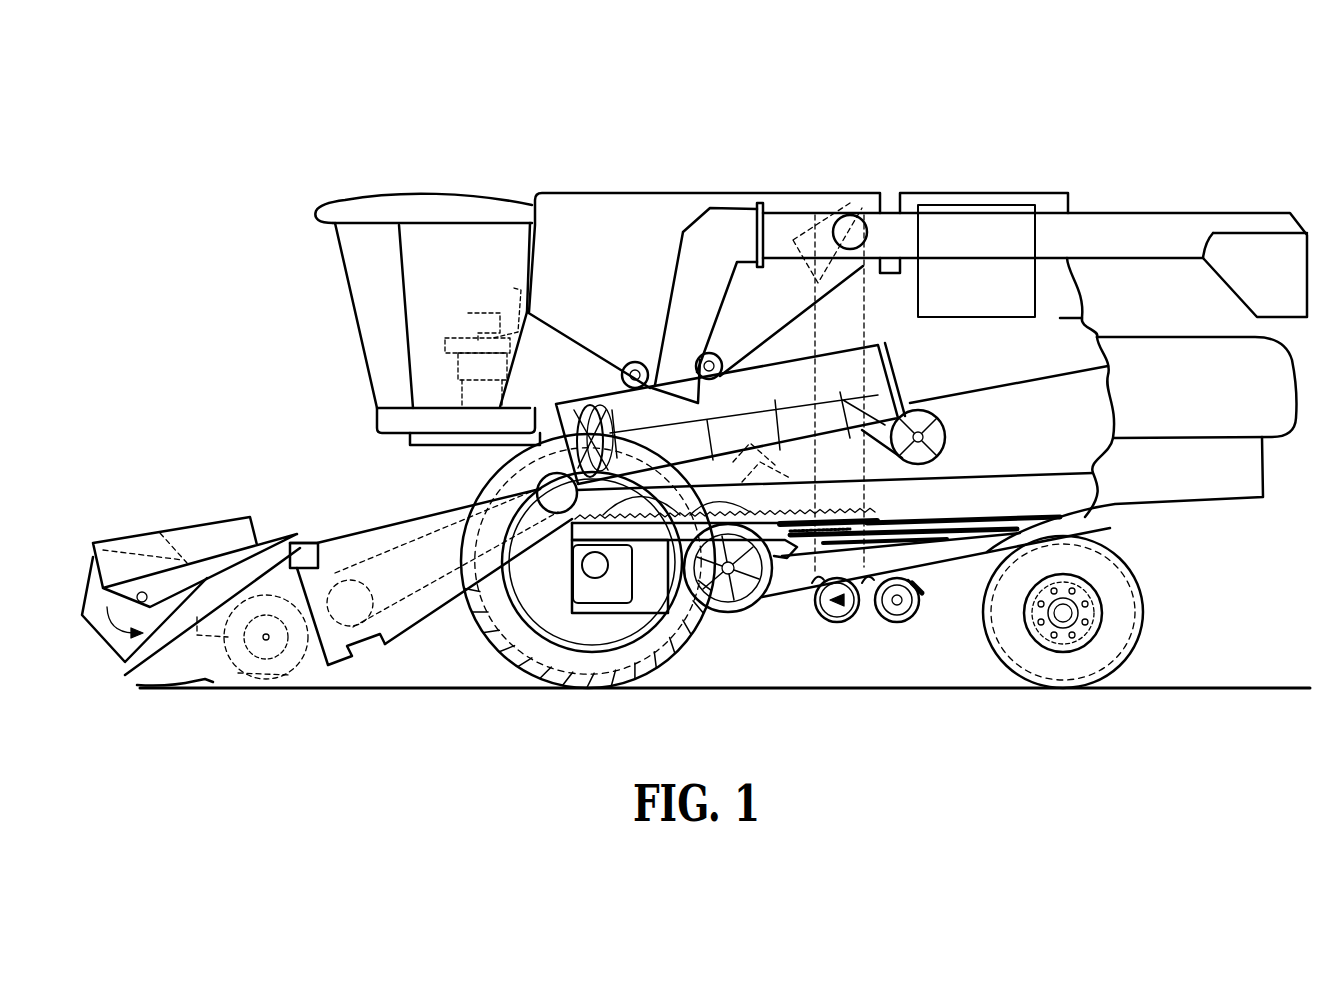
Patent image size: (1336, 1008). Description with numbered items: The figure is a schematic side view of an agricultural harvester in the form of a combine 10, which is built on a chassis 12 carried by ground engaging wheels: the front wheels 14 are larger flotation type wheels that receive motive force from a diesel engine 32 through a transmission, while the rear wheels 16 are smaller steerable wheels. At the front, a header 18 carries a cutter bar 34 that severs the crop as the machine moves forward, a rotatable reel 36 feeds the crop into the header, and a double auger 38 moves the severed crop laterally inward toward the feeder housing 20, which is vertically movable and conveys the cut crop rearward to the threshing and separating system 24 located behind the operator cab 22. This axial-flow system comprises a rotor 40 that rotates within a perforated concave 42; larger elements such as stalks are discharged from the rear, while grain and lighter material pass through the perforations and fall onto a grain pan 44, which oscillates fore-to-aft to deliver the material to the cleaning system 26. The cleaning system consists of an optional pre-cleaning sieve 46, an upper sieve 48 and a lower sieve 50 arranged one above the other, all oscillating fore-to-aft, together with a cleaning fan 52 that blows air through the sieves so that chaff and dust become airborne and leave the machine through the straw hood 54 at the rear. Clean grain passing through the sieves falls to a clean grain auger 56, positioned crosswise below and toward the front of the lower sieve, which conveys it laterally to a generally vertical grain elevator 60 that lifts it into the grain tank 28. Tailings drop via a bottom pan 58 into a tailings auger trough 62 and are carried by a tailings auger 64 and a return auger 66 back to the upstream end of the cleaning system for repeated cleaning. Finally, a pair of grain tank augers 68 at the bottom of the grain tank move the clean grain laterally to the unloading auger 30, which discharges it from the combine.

The combine 10 is at (392, 162).
The chassis 12 is at (1097, 520).
The front wheels 14 is at (497, 648).
The rear wheels 16 is at (1142, 612).
The header 18 is at (178, 503).
The feeder housing 20 is at (382, 523).
The operator cab 22 is at (355, 293).
The threshing and separating system 24 is at (490, 458).
The cleaning system 26 is at (790, 624).
The grain tank 28 is at (567, 198).
The unloading auger 30 is at (1155, 225).
The diesel engine 32 is at (960, 205).
The cutter bar 34 is at (215, 683).
The reel 36 is at (87, 583).
The double auger 38 is at (270, 655).
The rotor 40 is at (590, 422).
The concave 42 is at (762, 385).
The grain pan 44 is at (570, 543).
The pre-cleaning sieve 46 is at (875, 513).
The upper sieve 48 is at (978, 520).
The lower sieve 50 is at (937, 568).
The cleaning fan 52 is at (730, 593).
The straw hood 54 is at (1272, 382).
The clean grain auger 56 is at (840, 608).
The bottom pan 58 is at (1013, 552).
The grain elevator 60 is at (870, 320).
The tailings auger trough 62 is at (974, 545).
The tailings auger 64 is at (896, 612).
The return auger 66 is at (807, 487).
The grain tank augers 68 is at (630, 363).